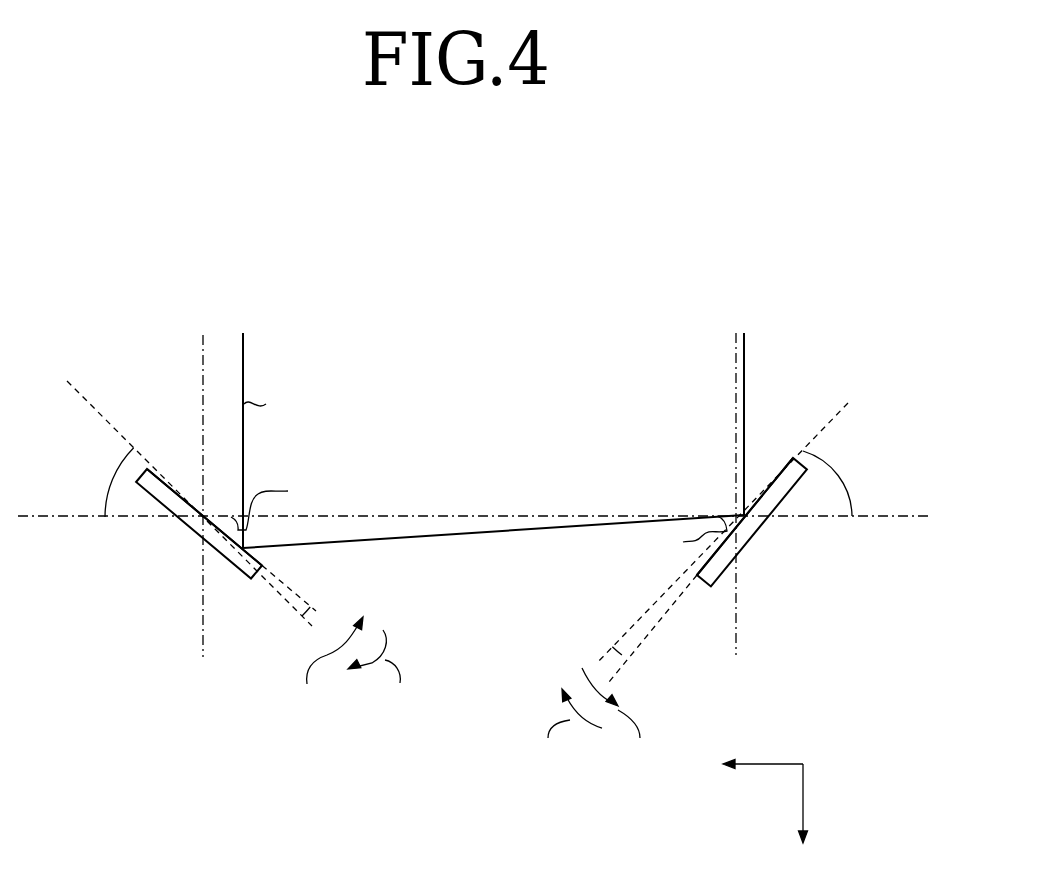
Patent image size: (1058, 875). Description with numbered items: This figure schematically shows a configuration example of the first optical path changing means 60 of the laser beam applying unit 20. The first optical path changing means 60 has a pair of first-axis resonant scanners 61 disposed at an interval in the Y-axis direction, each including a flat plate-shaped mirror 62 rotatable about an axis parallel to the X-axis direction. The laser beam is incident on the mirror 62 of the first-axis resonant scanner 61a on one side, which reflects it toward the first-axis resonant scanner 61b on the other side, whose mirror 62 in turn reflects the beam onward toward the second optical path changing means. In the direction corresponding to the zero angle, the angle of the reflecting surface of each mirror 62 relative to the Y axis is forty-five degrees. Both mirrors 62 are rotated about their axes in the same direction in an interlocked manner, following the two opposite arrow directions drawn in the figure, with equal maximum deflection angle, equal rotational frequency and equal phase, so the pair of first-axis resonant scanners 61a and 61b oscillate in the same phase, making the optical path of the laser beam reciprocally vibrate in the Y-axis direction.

The laser beam applying unit 20 is at (481, 320).
The first optical path changing means 60 is at (245, 685).
The first-axis resonant scanner 61 is at (443, 557).
The first-axis resonant scanner on one side 61a is at (772, 557).
The first-axis resonant scanner on the other side 61b is at (151, 540).
The mirror 62 is at (203, 538).